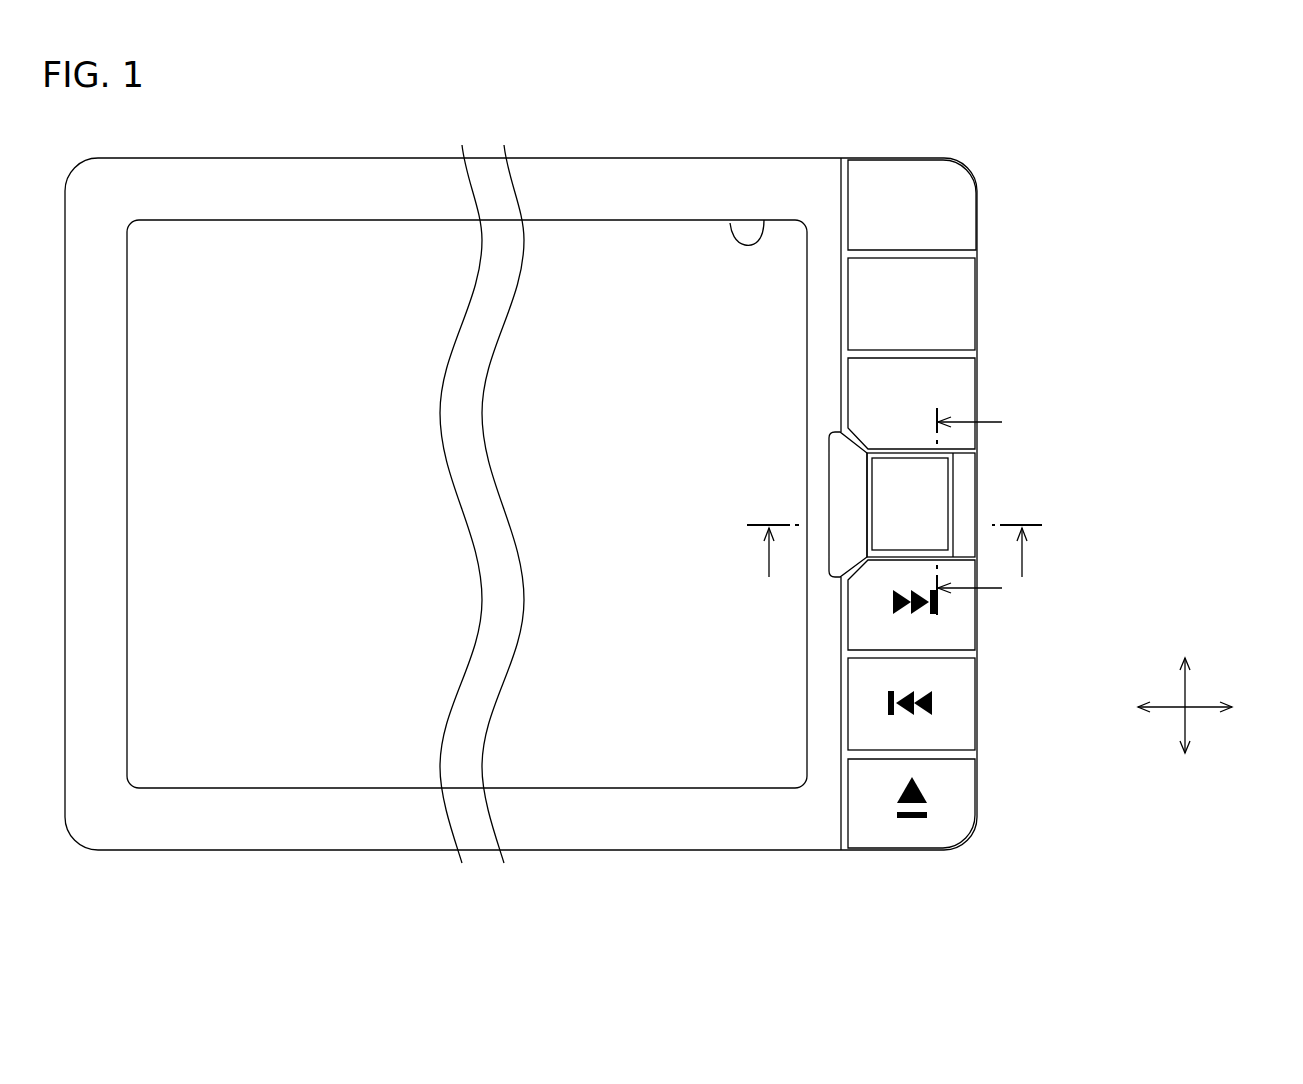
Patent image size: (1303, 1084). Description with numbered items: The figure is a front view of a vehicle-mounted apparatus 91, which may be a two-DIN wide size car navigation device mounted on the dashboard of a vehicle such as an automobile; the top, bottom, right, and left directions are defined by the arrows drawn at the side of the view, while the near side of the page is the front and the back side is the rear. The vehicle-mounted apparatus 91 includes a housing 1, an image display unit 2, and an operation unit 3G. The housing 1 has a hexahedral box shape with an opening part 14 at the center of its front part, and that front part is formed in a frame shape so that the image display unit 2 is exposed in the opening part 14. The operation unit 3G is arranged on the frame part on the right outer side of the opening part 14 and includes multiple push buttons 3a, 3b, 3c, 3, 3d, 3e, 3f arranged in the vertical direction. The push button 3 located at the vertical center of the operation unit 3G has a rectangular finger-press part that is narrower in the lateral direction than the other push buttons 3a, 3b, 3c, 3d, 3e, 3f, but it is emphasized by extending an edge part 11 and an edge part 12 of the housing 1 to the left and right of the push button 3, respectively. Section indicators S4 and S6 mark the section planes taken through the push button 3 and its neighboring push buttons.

The housing 1 is at (730, 158).
The image display unit 2 is at (595, 260).
The opening part 14 is at (764, 220).
The push button 3 is at (937, 477).
The push button 3a is at (962, 206).
The push button 3b is at (962, 290).
The push button 3c is at (962, 373).
The push button 3d is at (962, 633).
The push button 3e is at (960, 703).
The push button 3f is at (962, 807).
The operation unit 3G is at (914, 853).
The edge part 11 is at (847, 486).
The edge part 12 is at (963, 503).
The vehicle-mounted apparatus 91 is at (1040, 142).
The section line S4 is at (896, 554).
The section line S6 is at (977, 506).